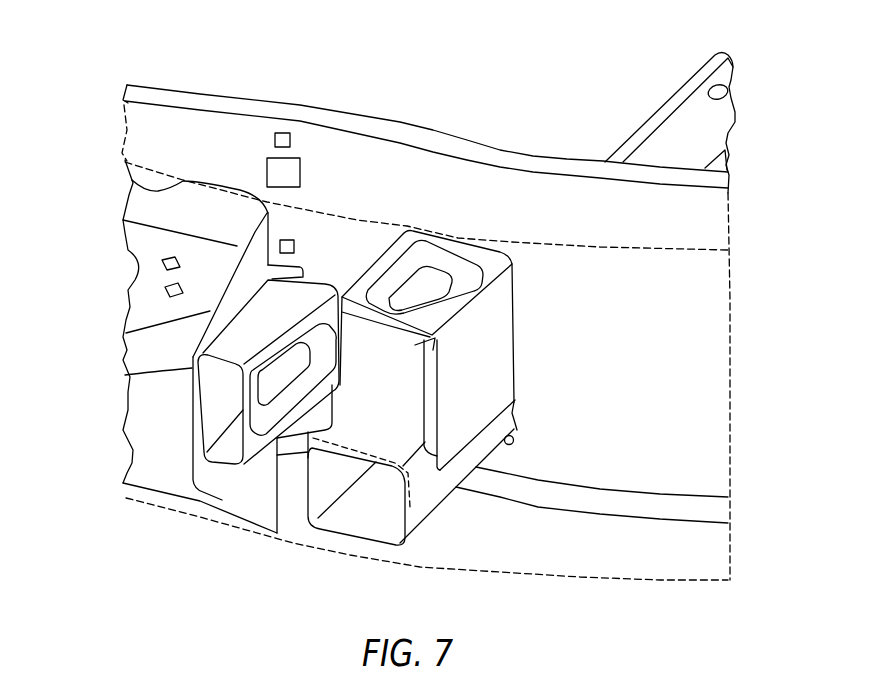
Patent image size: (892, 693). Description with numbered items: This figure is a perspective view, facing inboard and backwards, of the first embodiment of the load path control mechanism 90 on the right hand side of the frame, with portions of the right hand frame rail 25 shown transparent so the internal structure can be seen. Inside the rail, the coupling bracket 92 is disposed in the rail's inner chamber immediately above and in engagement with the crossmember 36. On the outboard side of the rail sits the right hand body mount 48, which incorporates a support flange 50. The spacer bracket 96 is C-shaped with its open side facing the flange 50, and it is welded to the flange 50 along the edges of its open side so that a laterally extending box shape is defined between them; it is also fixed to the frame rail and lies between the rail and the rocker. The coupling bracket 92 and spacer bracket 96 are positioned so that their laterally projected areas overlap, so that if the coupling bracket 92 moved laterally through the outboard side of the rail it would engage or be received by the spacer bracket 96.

The load path control mechanism 90 is at (243, 152).
The right hand frame rail 25 is at (347, 160).
The coupling bracket 92 is at (486, 262).
The right hand body mount 48 is at (163, 351).
The support flange 50 is at (207, 400).
The spacer bracket 96 is at (224, 467).
The crossmember 36 is at (364, 527).